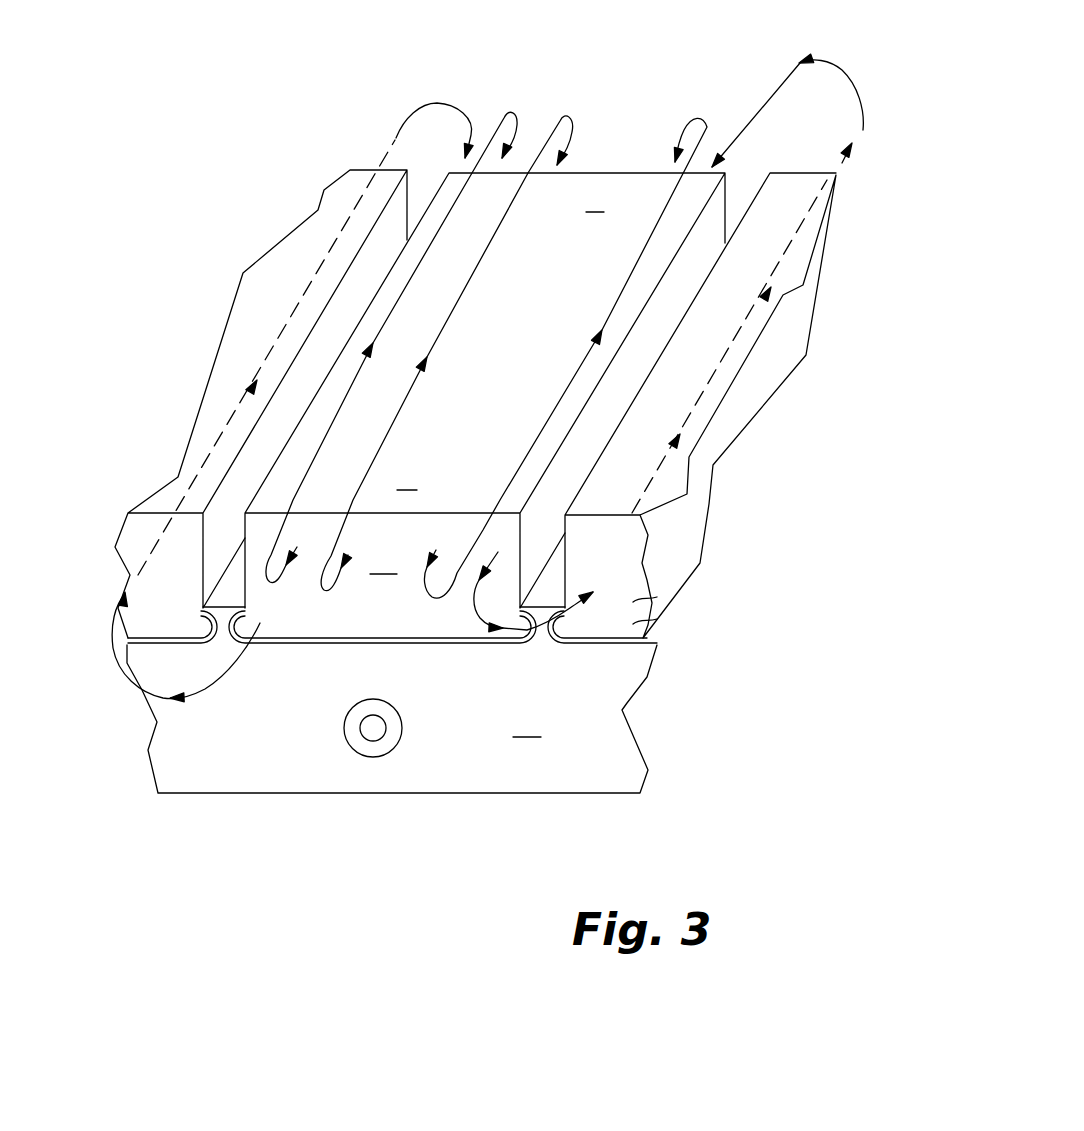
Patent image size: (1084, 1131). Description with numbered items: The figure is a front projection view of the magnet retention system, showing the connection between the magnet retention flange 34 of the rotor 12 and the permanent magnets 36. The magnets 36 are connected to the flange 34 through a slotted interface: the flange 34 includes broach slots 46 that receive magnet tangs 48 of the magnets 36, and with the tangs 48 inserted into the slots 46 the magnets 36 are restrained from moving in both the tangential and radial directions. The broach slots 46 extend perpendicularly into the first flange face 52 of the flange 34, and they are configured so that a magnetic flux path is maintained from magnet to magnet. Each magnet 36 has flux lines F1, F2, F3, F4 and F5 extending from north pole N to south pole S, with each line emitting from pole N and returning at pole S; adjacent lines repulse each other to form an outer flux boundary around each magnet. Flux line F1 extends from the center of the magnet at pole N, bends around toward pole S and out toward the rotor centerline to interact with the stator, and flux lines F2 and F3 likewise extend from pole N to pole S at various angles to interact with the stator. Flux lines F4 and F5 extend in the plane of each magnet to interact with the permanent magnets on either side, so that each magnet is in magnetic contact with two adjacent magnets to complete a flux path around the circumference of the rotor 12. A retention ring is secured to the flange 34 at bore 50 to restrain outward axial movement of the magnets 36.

The rotor 12 is at (614, 148).
The magnet retention flange 34 is at (560, 770).
The permanent magnets 36 is at (137, 562).
The broach slots 46 is at (162, 665).
The magnet tangs 48 is at (130, 634).
The bore 50 is at (367, 757).
The first flange face 52 is at (526, 725).
The flux line F1 is at (564, 120).
The flux line F2 is at (708, 124).
The flux line F3 is at (510, 115).
The flux line F4 is at (834, 62).
The flux line F5 is at (450, 103).